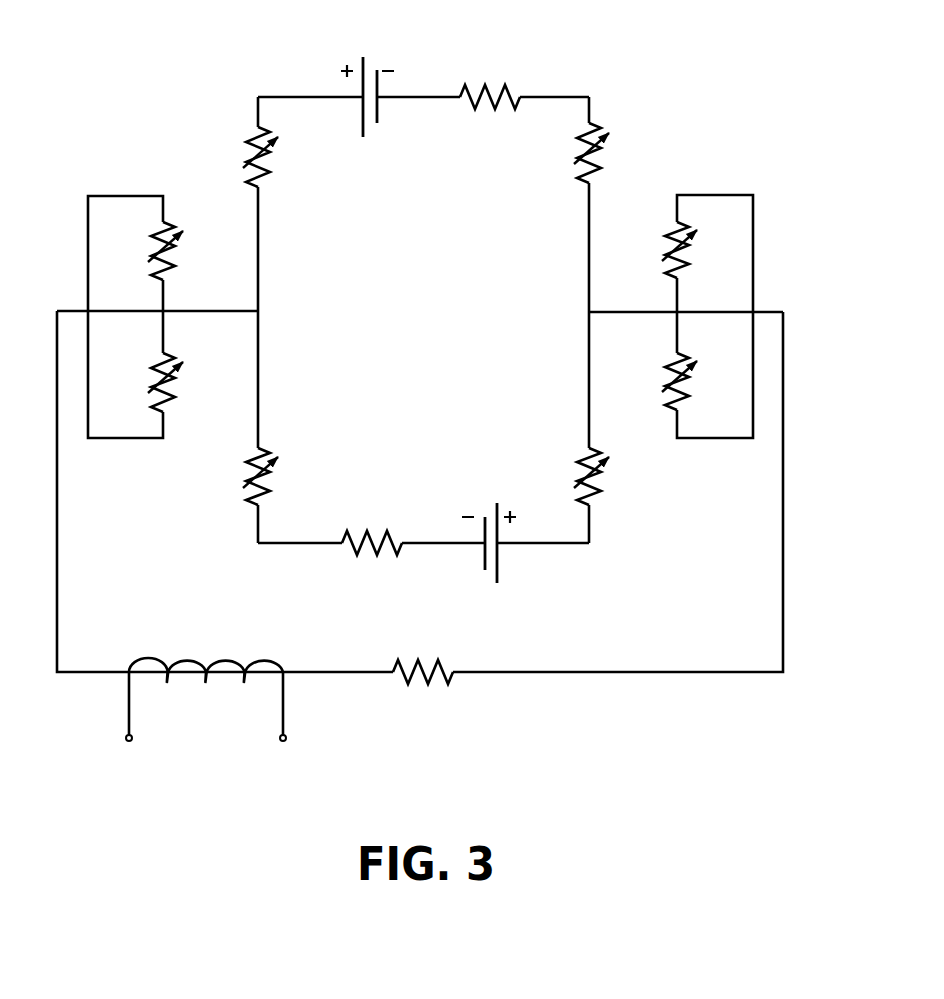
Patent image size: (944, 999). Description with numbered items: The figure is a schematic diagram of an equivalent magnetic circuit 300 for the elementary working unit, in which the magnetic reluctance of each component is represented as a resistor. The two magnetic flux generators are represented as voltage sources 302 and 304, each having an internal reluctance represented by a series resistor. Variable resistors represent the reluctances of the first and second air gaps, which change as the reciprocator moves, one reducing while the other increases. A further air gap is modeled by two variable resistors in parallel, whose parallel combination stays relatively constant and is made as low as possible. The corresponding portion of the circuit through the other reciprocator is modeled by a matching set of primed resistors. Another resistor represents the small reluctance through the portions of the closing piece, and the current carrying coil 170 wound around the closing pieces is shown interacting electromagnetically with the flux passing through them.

The equivalent magnetic circuit 300 is at (103, 62).
The voltage source 302 is at (343, 82).
The voltage source 304 is at (513, 563).
The current carrying coil 170 is at (129, 707).